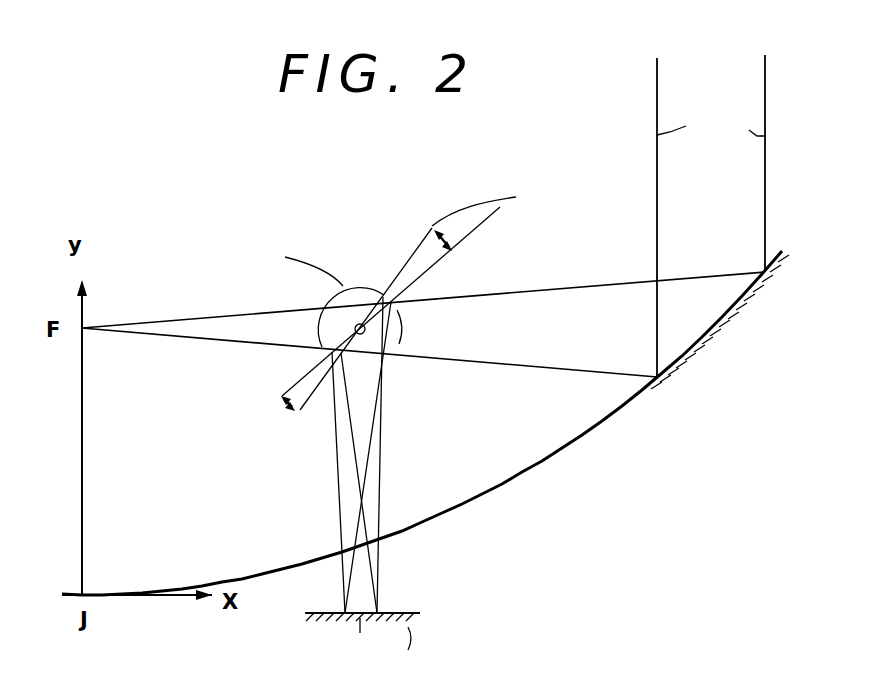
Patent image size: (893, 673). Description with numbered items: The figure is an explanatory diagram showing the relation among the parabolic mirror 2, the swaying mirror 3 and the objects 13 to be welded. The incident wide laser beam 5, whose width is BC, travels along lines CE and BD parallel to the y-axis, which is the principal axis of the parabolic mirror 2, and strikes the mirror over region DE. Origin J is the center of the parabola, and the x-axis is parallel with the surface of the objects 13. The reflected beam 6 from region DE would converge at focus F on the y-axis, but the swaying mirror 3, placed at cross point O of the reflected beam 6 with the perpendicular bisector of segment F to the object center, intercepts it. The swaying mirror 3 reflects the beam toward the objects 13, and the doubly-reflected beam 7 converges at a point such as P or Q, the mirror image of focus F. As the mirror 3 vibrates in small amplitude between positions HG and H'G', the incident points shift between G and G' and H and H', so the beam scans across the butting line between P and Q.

The parabolic mirror 2 is at (695, 357).
The swaying mirror 3 is at (396, 290).
The incident wide laser beam 5 is at (708, 197).
The reflected beam 6 is at (548, 292).
The doubly-reflected beam 7 is at (362, 478).
The objects to be welded 13 is at (323, 628).